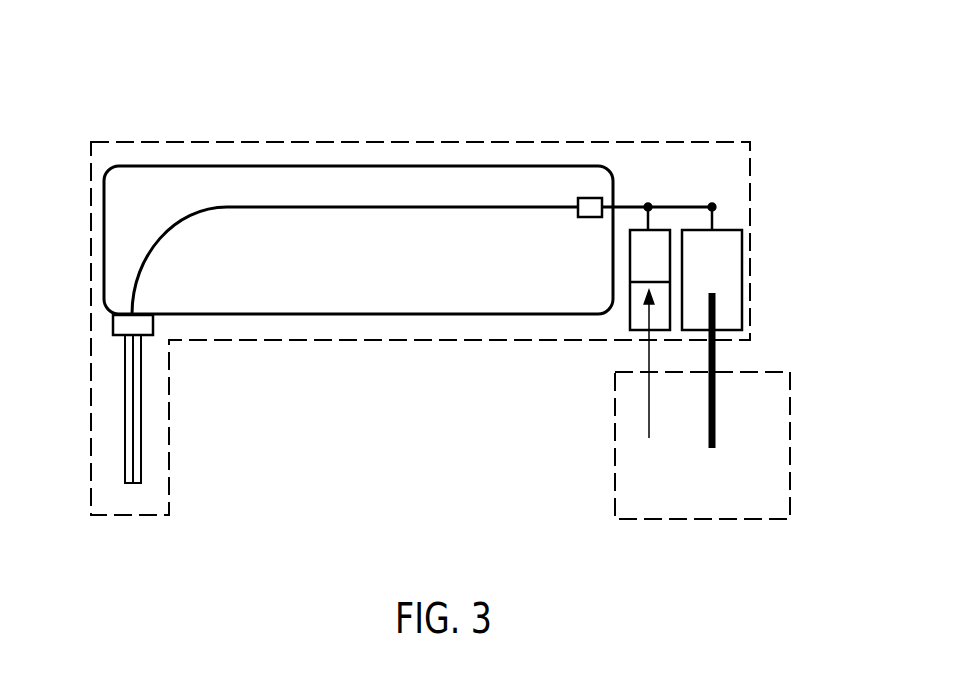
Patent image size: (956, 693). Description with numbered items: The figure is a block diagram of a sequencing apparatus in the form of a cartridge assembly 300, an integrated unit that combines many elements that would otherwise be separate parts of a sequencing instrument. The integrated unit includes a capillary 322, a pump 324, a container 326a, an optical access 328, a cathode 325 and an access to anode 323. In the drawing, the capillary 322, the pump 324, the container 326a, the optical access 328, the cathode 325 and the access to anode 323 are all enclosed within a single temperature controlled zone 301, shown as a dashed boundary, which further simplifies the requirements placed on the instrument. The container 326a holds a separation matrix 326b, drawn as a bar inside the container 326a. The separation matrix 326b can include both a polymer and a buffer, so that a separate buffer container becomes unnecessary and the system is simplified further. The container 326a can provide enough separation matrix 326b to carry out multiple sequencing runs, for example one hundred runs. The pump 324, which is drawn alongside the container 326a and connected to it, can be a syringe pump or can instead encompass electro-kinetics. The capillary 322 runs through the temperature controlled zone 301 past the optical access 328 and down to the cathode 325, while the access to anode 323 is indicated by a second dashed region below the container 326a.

The cartridge assembly 300 is at (208, 68).
The temperature controlled zone 301 is at (172, 142).
The capillary 322 is at (145, 257).
The access to anode 323 is at (717, 417).
The pump 324 is at (662, 230).
The cathode 325 is at (125, 379).
The container 326a is at (745, 290).
The separation matrix 326b is at (712, 290).
The optical access 328 is at (591, 198).